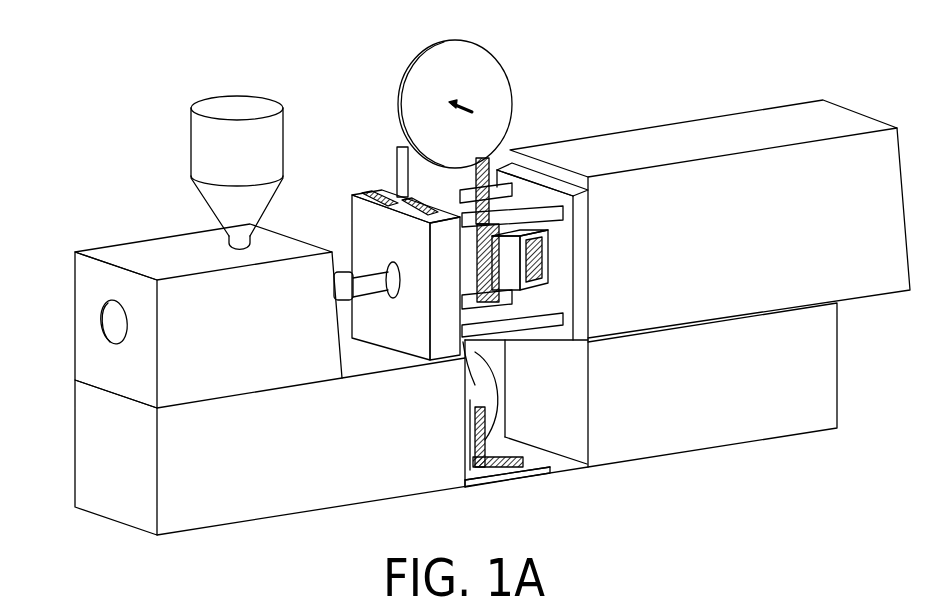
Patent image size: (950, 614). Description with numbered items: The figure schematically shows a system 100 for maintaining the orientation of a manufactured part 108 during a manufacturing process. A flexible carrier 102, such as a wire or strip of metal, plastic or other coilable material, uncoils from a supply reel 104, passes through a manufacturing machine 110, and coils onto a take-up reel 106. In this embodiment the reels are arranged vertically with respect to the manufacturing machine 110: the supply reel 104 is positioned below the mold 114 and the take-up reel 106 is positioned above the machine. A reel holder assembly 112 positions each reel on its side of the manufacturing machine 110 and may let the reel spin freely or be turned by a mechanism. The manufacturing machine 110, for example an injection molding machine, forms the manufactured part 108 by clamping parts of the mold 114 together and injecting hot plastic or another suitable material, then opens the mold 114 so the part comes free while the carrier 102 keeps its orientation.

The system 100 is at (148, 57).
The carrier 102 is at (478, 350).
The supply reel 104 is at (507, 425).
The take-up reel 106 is at (412, 52).
The manufactured part 108 is at (488, 168).
The manufacturing machine 110 is at (628, 128).
The reel holder assembly 112 is at (397, 175).
The mold 114 is at (520, 262).